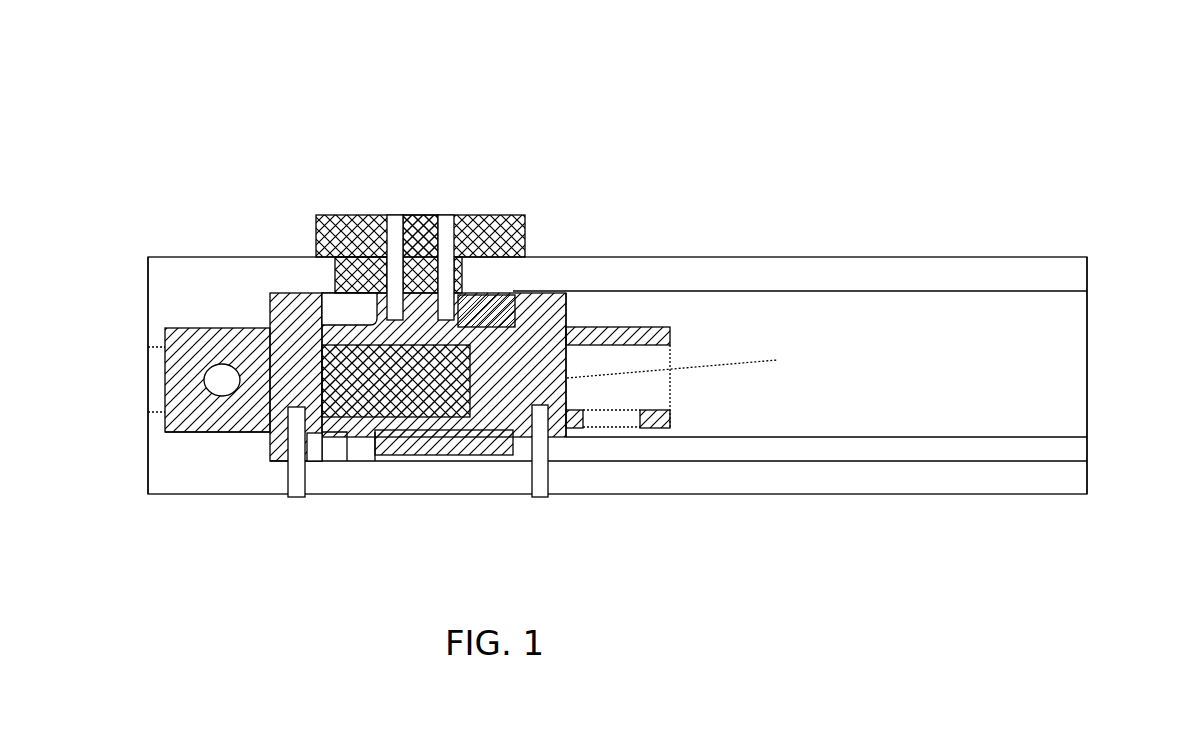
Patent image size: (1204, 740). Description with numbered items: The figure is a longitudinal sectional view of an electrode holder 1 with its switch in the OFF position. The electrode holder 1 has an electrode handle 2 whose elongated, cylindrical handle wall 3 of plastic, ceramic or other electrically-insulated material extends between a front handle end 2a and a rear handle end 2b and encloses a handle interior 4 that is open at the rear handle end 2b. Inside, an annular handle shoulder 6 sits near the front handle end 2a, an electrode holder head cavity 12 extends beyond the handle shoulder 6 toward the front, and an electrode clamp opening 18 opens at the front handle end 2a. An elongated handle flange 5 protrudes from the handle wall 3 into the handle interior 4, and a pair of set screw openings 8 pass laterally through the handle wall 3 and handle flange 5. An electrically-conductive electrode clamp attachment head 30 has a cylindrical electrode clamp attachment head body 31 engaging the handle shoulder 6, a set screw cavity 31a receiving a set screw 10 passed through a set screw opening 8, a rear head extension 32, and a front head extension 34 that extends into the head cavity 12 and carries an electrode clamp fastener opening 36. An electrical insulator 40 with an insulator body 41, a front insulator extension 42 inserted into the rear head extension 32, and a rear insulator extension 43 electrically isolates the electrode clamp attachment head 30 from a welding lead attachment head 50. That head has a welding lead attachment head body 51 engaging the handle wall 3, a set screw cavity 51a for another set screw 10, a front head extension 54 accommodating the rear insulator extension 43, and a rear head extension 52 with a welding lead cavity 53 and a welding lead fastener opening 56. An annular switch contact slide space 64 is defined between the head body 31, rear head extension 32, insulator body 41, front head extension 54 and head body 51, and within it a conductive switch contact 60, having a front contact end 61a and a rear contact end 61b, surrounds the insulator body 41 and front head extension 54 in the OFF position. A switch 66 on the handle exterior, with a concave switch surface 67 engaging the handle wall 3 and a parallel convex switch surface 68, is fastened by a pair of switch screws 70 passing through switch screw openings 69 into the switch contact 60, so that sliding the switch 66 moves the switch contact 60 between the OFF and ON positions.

The electrode holder 1 is at (350, 88).
The electrode handle 2 is at (902, 246).
The front handle end 2a is at (147, 280).
The rear handle end 2b is at (1088, 272).
The handle wall 3 is at (980, 272).
The handle interior 4 is at (1058, 340).
The handle flange 5 is at (747, 447).
The handle shoulder 6 is at (278, 445).
The set screw openings 8 is at (543, 483).
The set screw 10 is at (523, 497).
The electrode holder head cavity 12 is at (165, 356).
The electrode clamp opening 18 is at (147, 357).
The electrode clamp attachment head 30 is at (168, 322).
The electrode clamp attachment head body 31 is at (322, 310).
The set screw cavity 31a is at (296, 458).
The rear head extension 32 is at (340, 445).
The front head extension 34 is at (243, 432).
The electrode clamp fastener opening 36 is at (207, 383).
The electrical insulator 40 is at (360, 447).
The insulator body 41 is at (430, 464).
The front insulator extension 42 is at (273, 307).
The rear insulator extension 43 is at (285, 318).
The welding lead attachment head 50 is at (652, 324).
The welding lead attachment head body 51 is at (583, 297).
The set screw cavity 51a is at (567, 395).
The rear head extension 52 is at (665, 336).
The welding lead cavity 53 is at (640, 412).
The front head extension 54 is at (455, 456).
The welding lead fastener opening 56 is at (643, 415).
The switch contact 60 is at (430, 470).
The front contact end 61a is at (333, 268).
The rear contact end 61b is at (567, 307).
The switch contact slide space 64 is at (482, 291).
The switch 66 is at (530, 217).
The concave switch surface 67 is at (307, 228).
The convex switch surface 68 is at (348, 216).
The switch screw openings 69 is at (397, 215).
The switch screws 70 is at (442, 215).